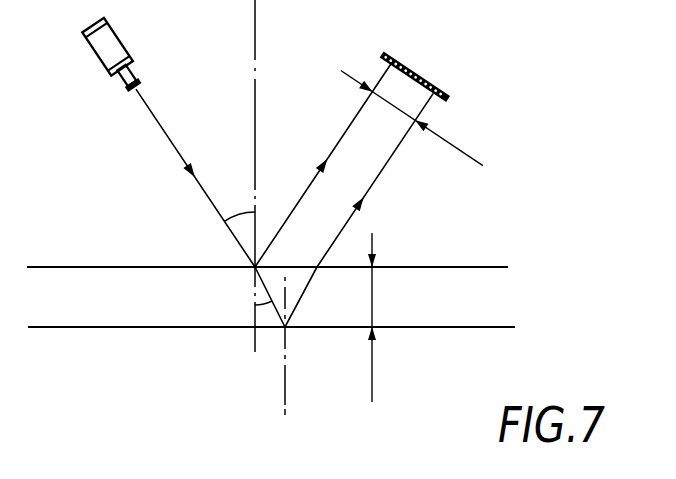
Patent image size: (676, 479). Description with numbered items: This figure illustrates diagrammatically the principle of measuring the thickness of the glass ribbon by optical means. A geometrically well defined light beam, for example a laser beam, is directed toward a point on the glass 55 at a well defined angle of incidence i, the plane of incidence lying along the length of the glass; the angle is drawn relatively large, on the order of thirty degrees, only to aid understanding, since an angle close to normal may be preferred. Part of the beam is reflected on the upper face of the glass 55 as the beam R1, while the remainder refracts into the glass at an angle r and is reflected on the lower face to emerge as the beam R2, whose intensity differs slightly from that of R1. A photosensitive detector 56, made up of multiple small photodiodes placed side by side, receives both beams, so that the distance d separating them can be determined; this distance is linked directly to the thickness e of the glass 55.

The glass 55 is at (271, 297).
The photosensitive detector 56 is at (450, 100).
The beam reflected on the upper face R1 is at (323, 164).
The beam reflected on the lower face R2 is at (375, 180).
The distance separating the two beams d is at (411, 118).
The thickness e is at (381, 317).
The angle of incidence i is at (239, 202).
The angle of refraction r is at (263, 314).